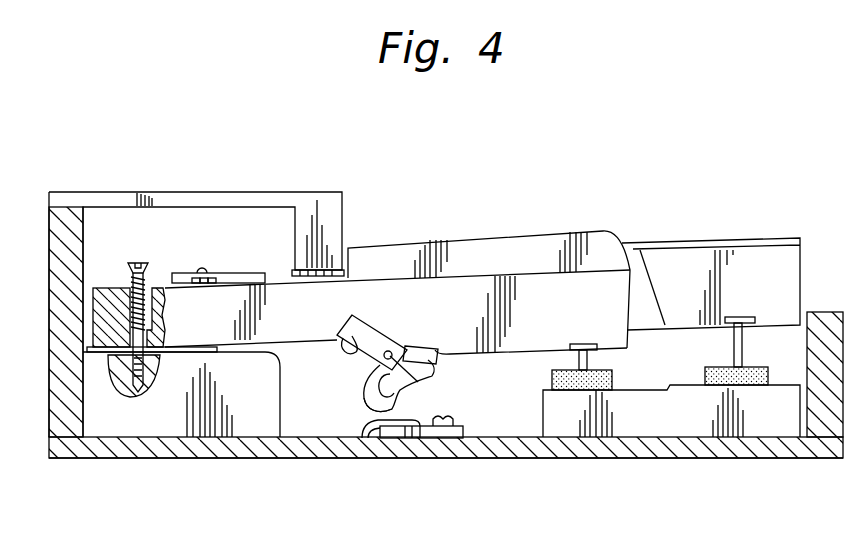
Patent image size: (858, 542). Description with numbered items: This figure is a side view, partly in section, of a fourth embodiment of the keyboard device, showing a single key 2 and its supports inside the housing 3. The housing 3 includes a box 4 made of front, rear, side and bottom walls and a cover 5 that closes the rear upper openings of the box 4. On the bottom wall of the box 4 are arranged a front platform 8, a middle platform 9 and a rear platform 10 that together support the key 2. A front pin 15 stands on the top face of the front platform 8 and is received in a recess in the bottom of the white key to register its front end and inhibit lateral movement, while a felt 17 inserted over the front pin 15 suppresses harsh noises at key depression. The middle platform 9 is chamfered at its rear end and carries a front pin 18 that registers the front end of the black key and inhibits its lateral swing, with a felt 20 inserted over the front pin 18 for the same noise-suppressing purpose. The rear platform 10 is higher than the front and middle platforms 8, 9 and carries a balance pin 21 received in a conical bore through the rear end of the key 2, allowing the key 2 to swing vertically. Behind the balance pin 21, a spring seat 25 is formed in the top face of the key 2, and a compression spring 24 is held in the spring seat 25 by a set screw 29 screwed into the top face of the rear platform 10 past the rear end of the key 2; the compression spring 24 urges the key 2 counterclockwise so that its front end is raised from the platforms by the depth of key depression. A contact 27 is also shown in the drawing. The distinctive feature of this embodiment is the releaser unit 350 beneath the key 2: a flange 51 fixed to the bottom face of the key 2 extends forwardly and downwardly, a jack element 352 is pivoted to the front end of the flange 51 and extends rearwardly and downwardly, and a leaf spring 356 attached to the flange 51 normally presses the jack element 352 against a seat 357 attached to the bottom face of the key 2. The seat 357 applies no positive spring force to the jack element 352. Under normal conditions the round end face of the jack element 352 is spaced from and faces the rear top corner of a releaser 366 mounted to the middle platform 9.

The key 2 is at (600, 240).
The housing 3 is at (274, 464).
The box 4 is at (668, 450).
The cover 5 is at (127, 198).
The front platform 8 is at (707, 427).
The middle platform 9 is at (442, 432).
The rear platform 10 is at (207, 435).
The front pin 15 is at (745, 339).
The felt 17 is at (763, 378).
The front pin 18 is at (597, 357).
The felt 20 is at (612, 378).
The balance pin 21 is at (201, 268).
The compression spring 24 is at (143, 287).
The spring seat 25 is at (130, 292).
The contact 27 is at (300, 271).
The set screw 29 is at (138, 262).
The flange 51 is at (360, 328).
The releaser unit 350 is at (389, 311).
The jack element 352 is at (420, 382).
The leaf spring 356 is at (363, 398).
The seat 357 is at (442, 356).
The releaser 366 is at (366, 438).